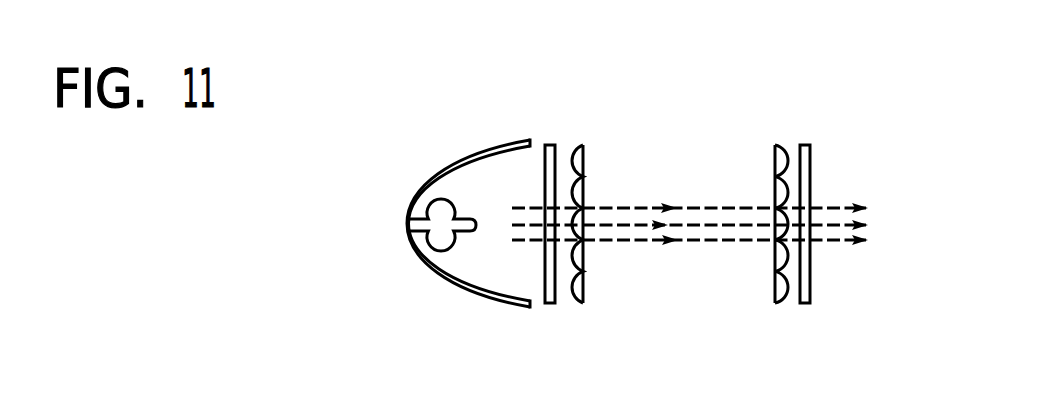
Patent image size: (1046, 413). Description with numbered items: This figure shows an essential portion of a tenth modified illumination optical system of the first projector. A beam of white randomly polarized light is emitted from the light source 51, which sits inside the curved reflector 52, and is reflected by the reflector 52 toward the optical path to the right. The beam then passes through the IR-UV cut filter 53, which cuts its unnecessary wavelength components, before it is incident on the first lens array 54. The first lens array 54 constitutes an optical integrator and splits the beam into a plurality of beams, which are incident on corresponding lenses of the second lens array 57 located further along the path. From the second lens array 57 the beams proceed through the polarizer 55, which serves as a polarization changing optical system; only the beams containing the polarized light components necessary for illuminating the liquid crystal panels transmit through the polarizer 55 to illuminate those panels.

The light source 51 is at (438, 221).
The reflector 52 is at (450, 157).
The IR-UV cut filter 53 is at (552, 141).
The first lens array 54 is at (582, 143).
The polarizer 55 is at (805, 143).
The second lens array 57 is at (782, 143).